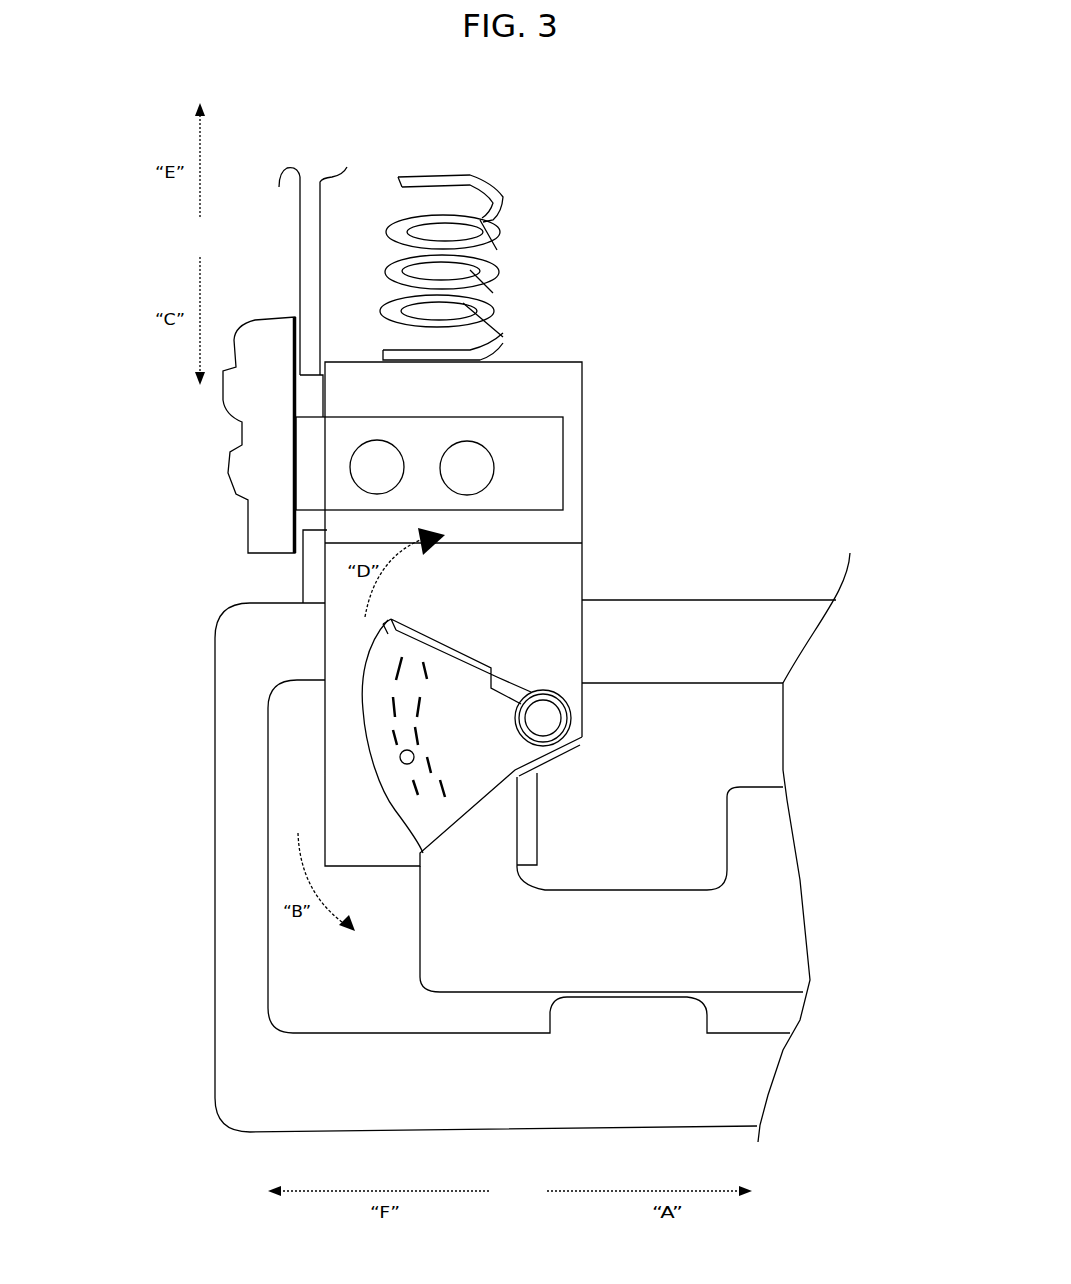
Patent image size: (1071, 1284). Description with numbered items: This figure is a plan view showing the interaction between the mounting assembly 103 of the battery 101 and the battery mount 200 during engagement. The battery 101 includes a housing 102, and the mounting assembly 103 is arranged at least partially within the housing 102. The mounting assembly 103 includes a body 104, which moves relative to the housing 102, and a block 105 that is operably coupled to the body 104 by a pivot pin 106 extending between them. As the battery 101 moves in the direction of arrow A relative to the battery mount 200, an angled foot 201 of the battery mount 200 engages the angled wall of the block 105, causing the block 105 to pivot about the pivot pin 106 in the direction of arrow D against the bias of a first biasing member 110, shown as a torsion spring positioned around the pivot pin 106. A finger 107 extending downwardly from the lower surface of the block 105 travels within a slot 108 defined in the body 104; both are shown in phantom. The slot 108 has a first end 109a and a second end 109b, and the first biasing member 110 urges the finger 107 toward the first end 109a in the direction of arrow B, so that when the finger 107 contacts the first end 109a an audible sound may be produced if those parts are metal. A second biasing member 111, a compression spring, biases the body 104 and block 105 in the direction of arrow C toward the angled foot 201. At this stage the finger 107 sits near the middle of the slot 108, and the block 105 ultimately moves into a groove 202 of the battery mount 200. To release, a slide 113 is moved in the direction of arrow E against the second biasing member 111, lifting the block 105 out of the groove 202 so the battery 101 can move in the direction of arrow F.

The battery 101 is at (183, 977).
The housing 102 is at (233, 890).
The mounting assembly 103 is at (737, 293).
The body 104 is at (507, 582).
The block 105 is at (373, 720).
The pivot pin 106 is at (548, 720).
The finger 107 is at (400, 757).
The slot 108 is at (390, 698).
The first end 109a is at (443, 802).
The second end 109b is at (403, 657).
The first biasing member 110 is at (507, 680).
The second biasing member 111 is at (497, 243).
The slide 113 is at (242, 437).
The battery mount 200 is at (763, 916).
The angled foot 201 is at (493, 807).
The groove 202 is at (622, 852).